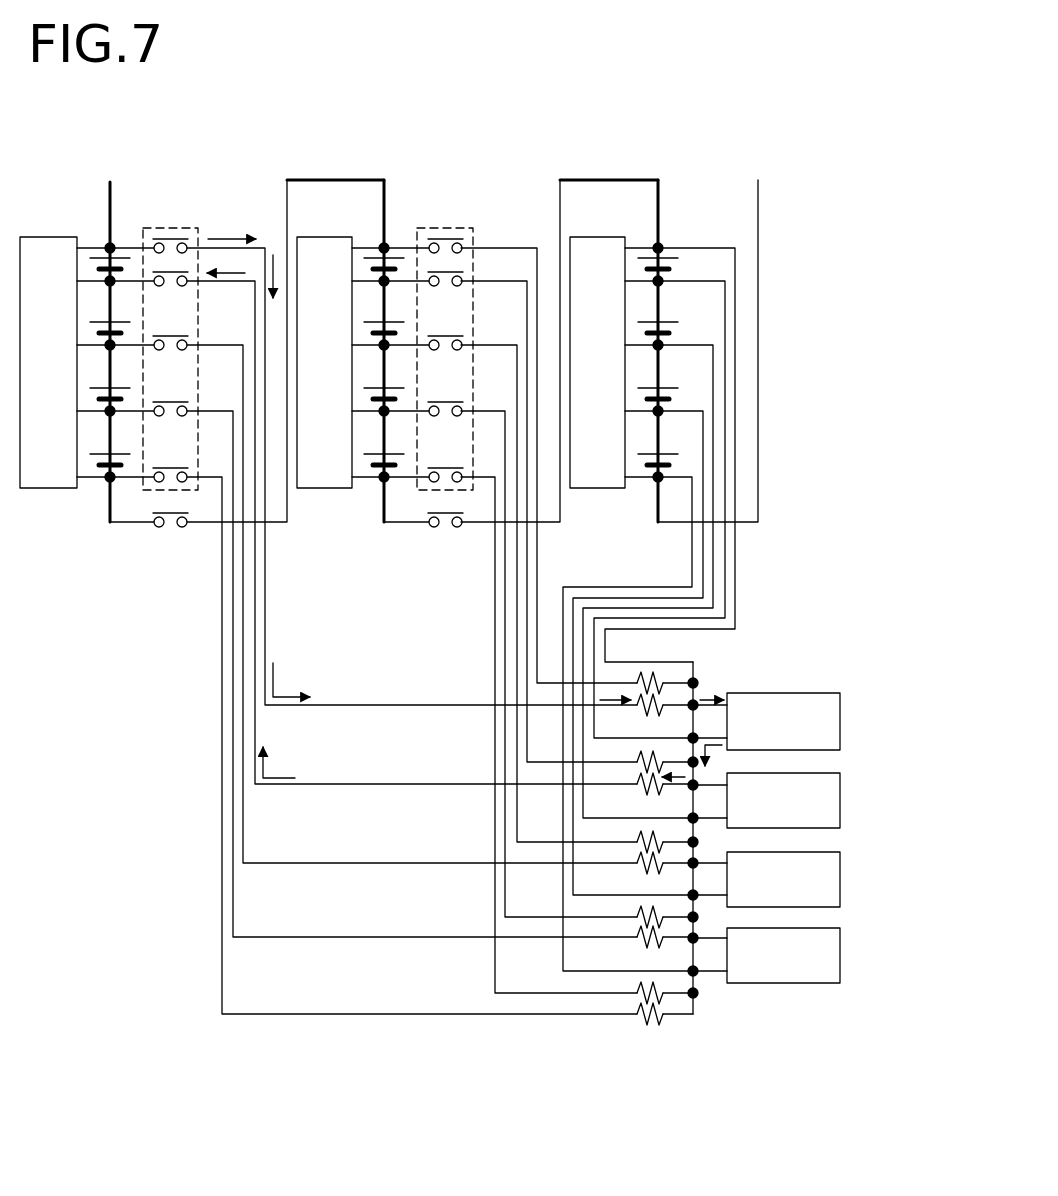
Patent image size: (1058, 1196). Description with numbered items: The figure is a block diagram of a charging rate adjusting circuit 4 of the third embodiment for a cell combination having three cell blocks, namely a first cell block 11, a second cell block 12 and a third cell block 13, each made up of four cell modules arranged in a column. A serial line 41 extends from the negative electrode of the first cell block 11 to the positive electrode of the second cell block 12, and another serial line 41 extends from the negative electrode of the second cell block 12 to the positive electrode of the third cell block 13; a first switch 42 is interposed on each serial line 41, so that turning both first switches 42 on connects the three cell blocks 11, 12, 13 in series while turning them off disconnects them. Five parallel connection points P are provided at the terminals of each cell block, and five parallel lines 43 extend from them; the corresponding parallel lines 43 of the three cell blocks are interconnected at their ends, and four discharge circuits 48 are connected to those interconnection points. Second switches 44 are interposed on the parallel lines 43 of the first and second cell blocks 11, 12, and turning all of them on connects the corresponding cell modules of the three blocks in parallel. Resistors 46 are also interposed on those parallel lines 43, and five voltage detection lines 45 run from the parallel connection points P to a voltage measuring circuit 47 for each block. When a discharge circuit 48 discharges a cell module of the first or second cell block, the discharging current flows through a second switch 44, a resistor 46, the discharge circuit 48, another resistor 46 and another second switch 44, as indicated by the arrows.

The charging rate adjusting circuit 4 is at (429, 131).
The first cell block 11 is at (136, 177).
The second cell block 12 is at (409, 175).
The third cell block 13 is at (681, 177).
The serial line 41 is at (329, 179).
The first switch 42 is at (172, 531).
The parallel line 43 is at (340, 705).
The second switch 44 is at (166, 228).
The voltage detection line 45 is at (96, 247).
The resistor 46 is at (652, 674).
The voltage measuring circuit 47 is at (42, 237).
The discharge circuit 48 is at (840, 716).